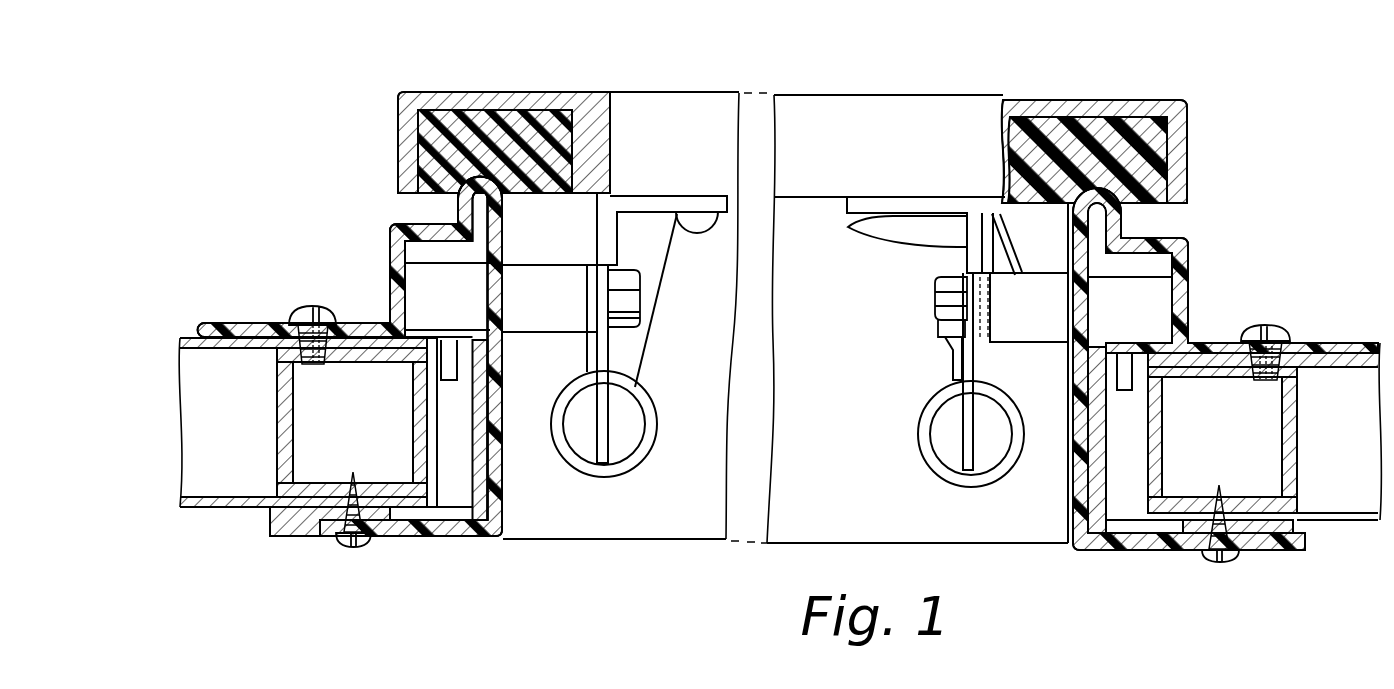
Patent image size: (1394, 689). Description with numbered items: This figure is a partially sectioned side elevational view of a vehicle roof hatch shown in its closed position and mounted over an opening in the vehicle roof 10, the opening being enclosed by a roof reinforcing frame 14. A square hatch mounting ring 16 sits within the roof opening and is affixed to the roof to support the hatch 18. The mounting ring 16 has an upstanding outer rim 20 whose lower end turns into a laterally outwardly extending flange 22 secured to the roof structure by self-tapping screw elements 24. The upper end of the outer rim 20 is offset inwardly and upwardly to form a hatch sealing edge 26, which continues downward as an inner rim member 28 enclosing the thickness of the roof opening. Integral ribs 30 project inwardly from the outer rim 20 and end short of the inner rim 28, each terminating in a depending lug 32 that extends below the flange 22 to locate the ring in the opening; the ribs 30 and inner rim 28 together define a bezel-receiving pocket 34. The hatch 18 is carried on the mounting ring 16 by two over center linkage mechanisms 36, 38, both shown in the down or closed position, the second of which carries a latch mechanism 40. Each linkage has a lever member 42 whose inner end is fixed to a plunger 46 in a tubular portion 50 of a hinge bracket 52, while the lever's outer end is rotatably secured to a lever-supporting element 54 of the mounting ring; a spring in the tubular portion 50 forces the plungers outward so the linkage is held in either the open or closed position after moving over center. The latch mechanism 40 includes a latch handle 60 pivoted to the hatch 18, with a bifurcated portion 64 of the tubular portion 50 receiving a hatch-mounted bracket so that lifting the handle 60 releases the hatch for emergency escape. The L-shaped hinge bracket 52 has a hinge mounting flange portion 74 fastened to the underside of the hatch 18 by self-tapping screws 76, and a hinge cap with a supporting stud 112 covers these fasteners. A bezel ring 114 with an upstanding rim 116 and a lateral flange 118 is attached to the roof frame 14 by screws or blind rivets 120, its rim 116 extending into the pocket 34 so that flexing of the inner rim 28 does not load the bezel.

The vehicle roof 10 is at (184, 336).
The roof reinforcing frame 14 is at (279, 411).
The hatch mounting ring 16 is at (390, 253).
The hatch 18 is at (1079, 100).
The outer rim 20 is at (393, 305).
The flange 22 is at (257, 323).
The self-tapping screw elements 24 is at (316, 358).
The hatch sealing edge 26 is at (490, 176).
The inner rim member 28 is at (496, 370).
The ribs 30 is at (440, 240).
The lug 32 is at (447, 380).
The bezel-receiving pocket 34 is at (482, 232).
The over center linkage mechanism 36 is at (606, 420).
The over center linkage mechanism 38 is at (961, 435).
The latch mechanism 40 is at (919, 252).
The lever member 42 is at (603, 352).
The plunger 46 is at (627, 443).
The tubular portion 50 is at (623, 470).
The hinge bracket 52 is at (664, 270).
The lever-supporting elements 54 is at (568, 265).
The latch handle 60 is at (870, 231).
The bifurcated portion 64 is at (953, 368).
The hinge mounting flange portion 74 is at (643, 200).
The self-tapping screws 76 is at (704, 226).
The supporting stud 112 is at (423, 478).
The bezel ring 114 is at (393, 537).
The upstanding rim 116 is at (480, 440).
The lateral flange 118 is at (303, 530).
The screws or blind rivets 120 is at (355, 487).